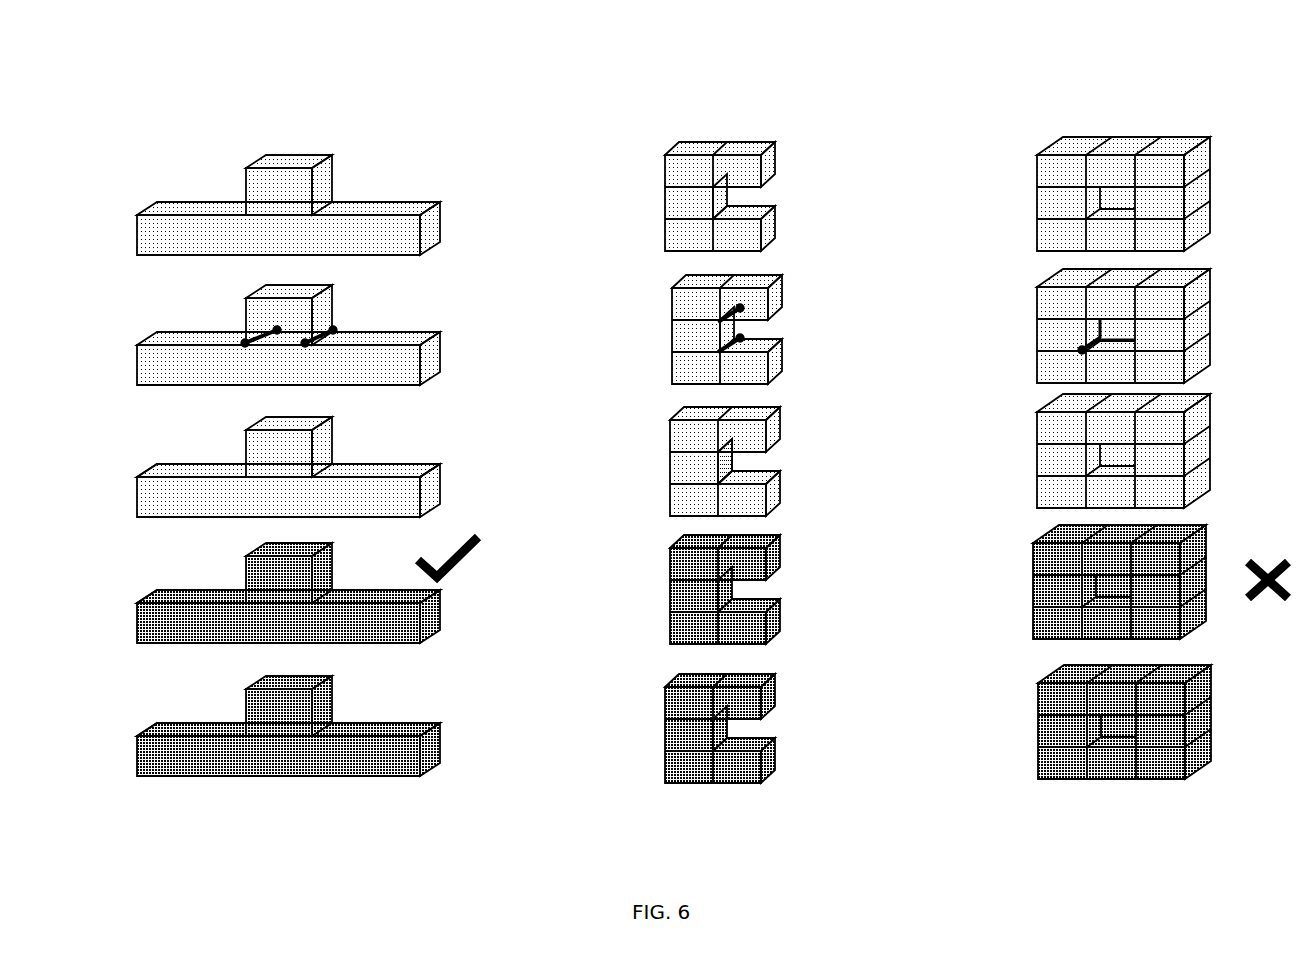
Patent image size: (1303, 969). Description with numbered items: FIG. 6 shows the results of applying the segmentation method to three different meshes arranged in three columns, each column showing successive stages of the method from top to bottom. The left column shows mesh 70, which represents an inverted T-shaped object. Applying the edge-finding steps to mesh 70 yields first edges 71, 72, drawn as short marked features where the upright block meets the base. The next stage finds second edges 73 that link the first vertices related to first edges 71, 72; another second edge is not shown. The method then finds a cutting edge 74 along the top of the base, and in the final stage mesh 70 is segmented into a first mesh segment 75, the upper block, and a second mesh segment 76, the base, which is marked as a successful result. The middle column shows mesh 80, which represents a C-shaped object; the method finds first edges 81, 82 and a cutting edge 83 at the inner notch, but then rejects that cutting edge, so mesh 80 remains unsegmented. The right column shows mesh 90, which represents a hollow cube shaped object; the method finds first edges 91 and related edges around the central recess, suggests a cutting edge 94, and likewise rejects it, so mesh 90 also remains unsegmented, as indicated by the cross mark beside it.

The mesh 70 is at (297, 163).
The first edge 71 is at (243, 342).
The first edge 72 is at (330, 333).
The second edge 73 is at (287, 478).
The cutting edge 74 is at (342, 600).
The first mesh segment 75 is at (252, 556).
The second mesh segment 76 is at (140, 620).
The mesh 80 is at (688, 168).
The first edge 81 is at (738, 318).
The first edge 82 is at (738, 340).
The cutting edge 83 is at (733, 460).
The mesh 90 is at (1050, 177).
The first edge 91 is at (1085, 322).
The cutting edge 94 is at (1070, 445).